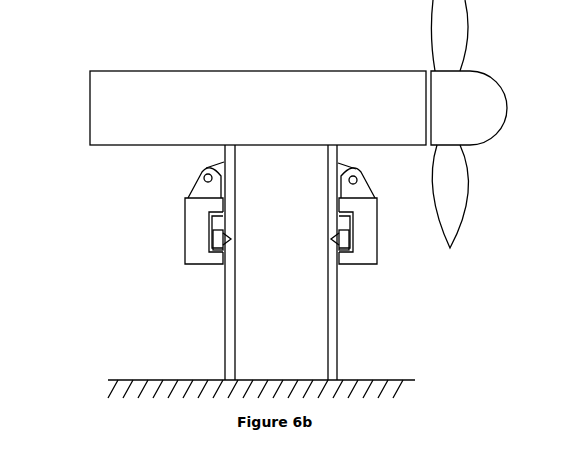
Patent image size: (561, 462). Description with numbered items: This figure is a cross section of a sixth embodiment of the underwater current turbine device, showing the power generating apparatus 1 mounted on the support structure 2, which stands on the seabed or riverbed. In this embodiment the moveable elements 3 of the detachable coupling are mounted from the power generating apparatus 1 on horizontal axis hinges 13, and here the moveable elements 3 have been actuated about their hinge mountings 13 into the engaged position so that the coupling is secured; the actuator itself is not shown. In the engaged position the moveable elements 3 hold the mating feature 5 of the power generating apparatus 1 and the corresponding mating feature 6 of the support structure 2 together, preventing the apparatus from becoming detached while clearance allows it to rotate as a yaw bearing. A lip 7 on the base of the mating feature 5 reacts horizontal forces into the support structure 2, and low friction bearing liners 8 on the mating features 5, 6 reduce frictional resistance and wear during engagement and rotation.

The power generating apparatus 1 is at (110, 118).
The support structure 2 is at (222, 338).
The moveable elements 3 is at (193, 228).
The mating feature 5 is at (215, 223).
The mating feature 6 is at (217, 240).
The lip 7 is at (223, 257).
The low friction bearing liners 8 is at (350, 252).
The horizontal axis hinges 13 is at (202, 175).